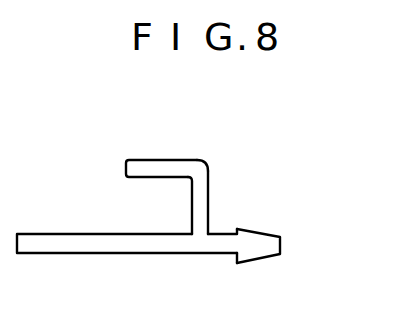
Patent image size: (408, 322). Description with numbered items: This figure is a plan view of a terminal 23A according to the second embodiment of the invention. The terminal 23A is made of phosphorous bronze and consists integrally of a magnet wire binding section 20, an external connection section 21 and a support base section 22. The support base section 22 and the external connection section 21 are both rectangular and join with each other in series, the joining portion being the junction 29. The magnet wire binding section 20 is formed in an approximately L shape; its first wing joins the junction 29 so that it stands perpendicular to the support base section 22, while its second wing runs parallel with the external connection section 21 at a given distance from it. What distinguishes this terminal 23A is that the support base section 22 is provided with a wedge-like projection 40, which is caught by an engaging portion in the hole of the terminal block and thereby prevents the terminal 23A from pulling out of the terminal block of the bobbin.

The magnet wire binding section 20 is at (186, 207).
The external connection section 21 is at (67, 240).
The support base section 22 is at (289, 235).
The terminal 23A is at (216, 150).
The junction 29 is at (202, 243).
The wedge-like projection 40 is at (247, 231).